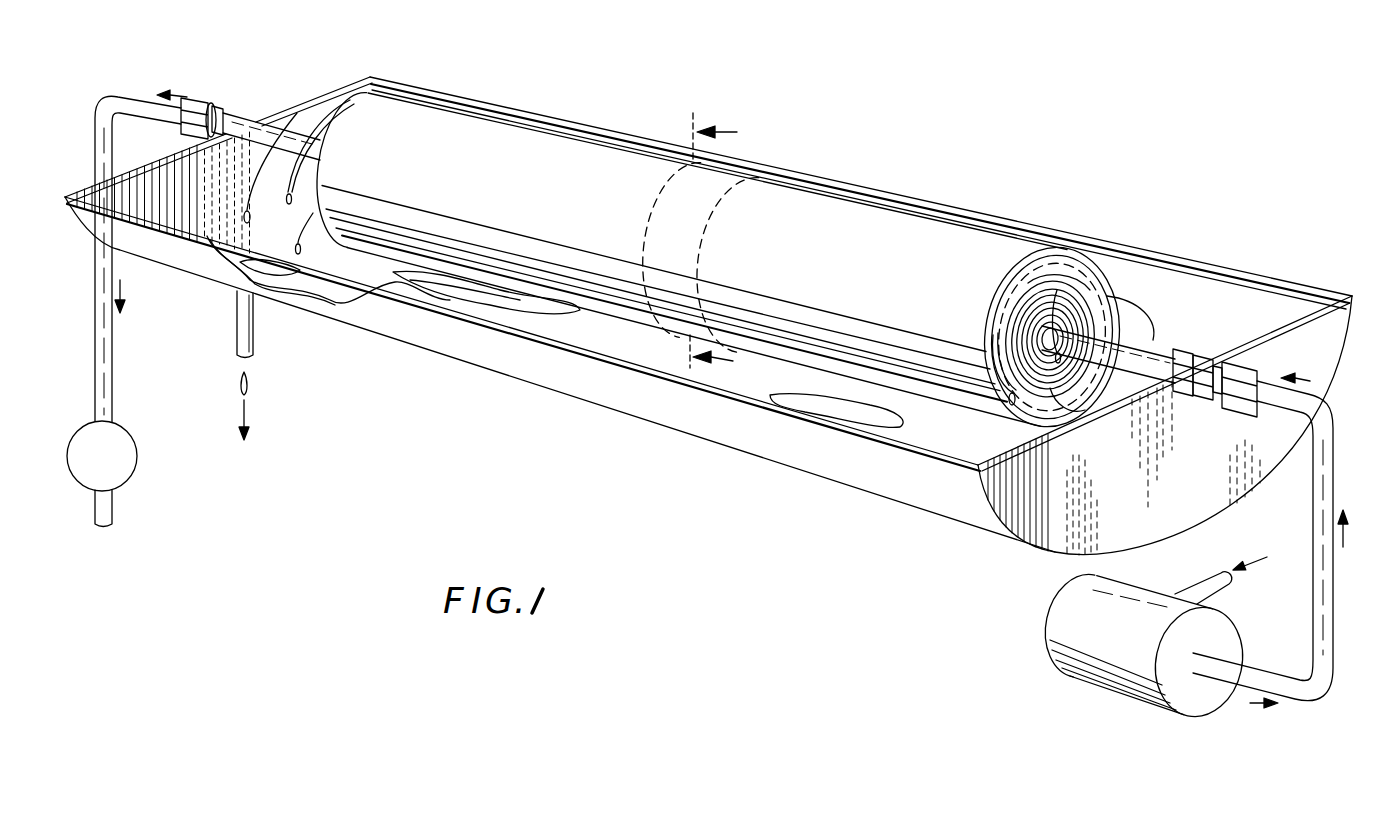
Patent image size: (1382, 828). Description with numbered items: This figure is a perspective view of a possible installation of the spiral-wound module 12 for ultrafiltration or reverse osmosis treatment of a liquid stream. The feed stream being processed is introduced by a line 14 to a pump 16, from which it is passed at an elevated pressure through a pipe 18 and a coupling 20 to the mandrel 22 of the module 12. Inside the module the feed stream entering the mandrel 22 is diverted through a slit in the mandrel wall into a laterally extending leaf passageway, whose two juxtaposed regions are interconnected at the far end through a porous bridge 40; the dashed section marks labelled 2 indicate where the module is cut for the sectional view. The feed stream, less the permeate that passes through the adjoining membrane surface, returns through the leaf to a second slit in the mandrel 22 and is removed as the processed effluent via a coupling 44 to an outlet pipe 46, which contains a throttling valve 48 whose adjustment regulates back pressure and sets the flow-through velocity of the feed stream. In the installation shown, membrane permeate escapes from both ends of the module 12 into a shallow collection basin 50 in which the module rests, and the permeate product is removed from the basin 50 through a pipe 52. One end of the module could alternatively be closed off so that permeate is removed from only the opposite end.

The section line 2- 2 is at (728, 250).
The module 12 is at (950, 240).
The line 14 is at (1230, 586).
The pump 16 is at (1048, 626).
The pipe 18 is at (1339, 614).
The coupling 20 is at (1236, 366).
The mandrel 22 is at (248, 118).
The porous bridge 40 is at (656, 196).
The coupling 44 is at (203, 101).
The outlet pipe 46 is at (112, 98).
The throttling valve 48 is at (127, 431).
The shallow collection basin 50 is at (823, 470).
The pipe 52 is at (255, 343).